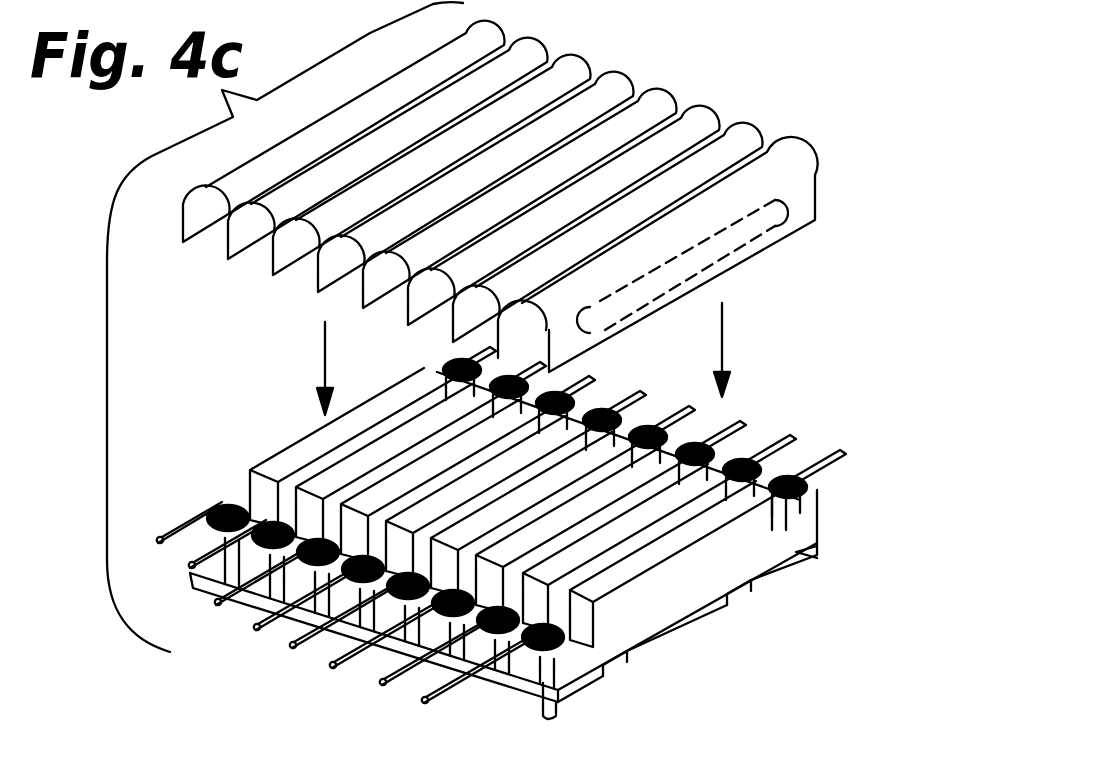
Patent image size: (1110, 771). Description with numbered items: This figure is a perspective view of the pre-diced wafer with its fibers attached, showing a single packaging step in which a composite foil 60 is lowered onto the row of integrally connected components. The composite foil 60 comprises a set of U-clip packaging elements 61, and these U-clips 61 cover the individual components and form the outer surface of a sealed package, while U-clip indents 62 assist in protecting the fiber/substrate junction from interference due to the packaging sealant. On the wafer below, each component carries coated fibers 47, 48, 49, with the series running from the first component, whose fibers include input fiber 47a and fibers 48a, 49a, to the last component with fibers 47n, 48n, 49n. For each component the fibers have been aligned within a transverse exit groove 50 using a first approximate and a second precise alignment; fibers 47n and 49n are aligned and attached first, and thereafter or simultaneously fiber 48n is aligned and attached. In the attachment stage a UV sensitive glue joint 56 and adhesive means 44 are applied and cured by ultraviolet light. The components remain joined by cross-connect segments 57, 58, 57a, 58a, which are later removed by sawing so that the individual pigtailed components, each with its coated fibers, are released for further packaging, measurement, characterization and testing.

The composite foil 60 is at (666, 58).
The U-clip packaging element 61 is at (488, 41).
The U-clip indent 62 is at (722, 245).
The coated fiber 47 is at (838, 467).
The input fiber 47a is at (787, 437).
The fiber 47n is at (452, 362).
The transverse exit groove 50 is at (233, 481).
The UV sensitive glue joint 56 is at (253, 474).
The adhesive means 44 is at (226, 500).
The output fiber 49n is at (165, 538).
The output fiber 48n is at (177, 526).
The coated fiber 49a is at (356, 672).
The coated fiber 48a is at (375, 703).
The coated fiber 49 is at (430, 680).
The coated fiber 48 is at (463, 688).
The cross-connect segment 57 is at (553, 704).
The cross-connect segment 57a is at (818, 558).
The cross-connect segment 58 is at (623, 668).
The cross-connect segment 58a is at (752, 604).